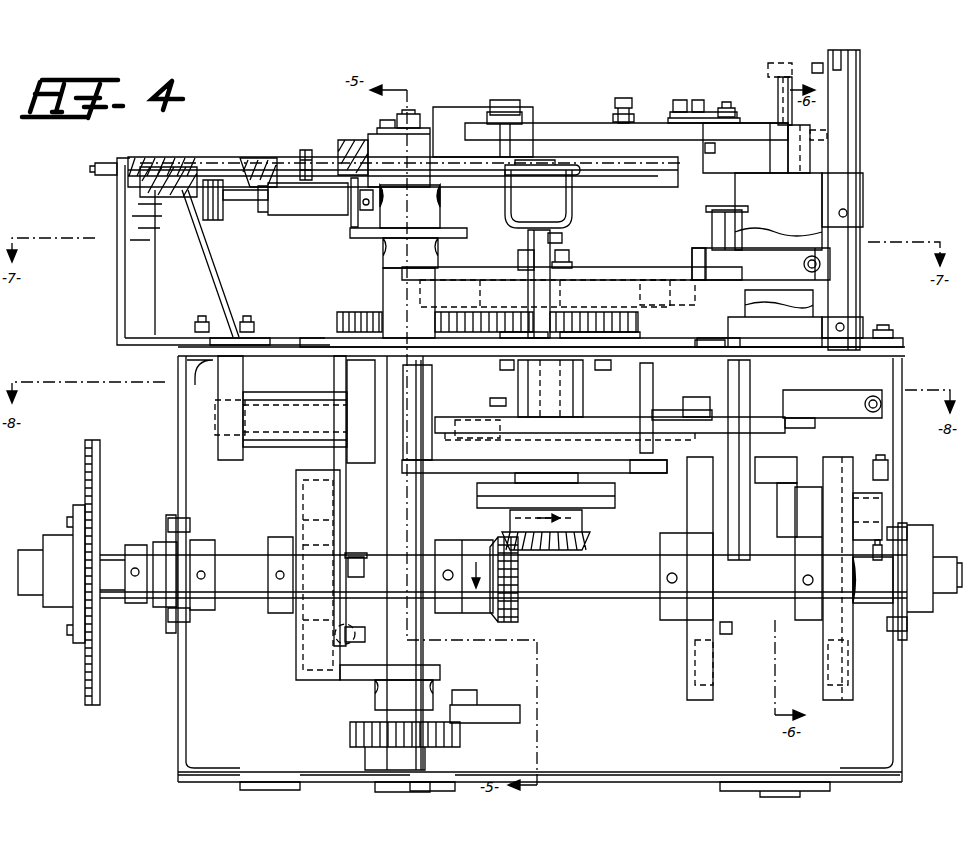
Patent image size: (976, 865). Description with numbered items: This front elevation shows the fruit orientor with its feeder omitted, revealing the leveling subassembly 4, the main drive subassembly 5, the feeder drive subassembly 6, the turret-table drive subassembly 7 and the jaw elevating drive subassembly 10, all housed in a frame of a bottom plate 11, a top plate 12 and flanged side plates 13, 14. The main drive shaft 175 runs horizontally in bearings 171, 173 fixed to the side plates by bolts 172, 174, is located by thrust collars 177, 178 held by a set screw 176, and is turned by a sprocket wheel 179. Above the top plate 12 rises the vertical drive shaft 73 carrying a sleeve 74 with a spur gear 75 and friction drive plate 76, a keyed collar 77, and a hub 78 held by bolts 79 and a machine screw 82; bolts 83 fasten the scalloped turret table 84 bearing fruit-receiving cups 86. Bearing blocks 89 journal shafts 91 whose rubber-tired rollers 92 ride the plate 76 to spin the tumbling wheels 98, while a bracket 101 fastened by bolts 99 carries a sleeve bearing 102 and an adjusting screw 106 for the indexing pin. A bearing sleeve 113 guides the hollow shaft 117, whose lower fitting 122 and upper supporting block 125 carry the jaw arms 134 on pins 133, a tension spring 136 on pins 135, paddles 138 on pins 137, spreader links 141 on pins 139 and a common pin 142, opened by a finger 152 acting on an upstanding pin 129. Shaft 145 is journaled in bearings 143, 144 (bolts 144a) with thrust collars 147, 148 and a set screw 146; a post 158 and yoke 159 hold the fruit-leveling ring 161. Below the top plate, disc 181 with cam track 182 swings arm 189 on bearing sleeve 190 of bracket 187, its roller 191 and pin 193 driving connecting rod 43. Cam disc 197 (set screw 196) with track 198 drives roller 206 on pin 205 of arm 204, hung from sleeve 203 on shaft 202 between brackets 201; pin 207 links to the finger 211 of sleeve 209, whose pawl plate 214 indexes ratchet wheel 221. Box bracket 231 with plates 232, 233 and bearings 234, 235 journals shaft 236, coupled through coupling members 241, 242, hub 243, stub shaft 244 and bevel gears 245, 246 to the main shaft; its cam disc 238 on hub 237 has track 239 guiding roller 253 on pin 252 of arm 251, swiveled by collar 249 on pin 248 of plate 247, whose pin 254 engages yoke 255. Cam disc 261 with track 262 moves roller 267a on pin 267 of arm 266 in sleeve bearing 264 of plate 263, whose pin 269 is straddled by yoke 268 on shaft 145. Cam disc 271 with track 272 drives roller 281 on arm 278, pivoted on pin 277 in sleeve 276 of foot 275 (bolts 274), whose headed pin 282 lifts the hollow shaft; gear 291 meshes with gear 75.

The leveling subassembly 4 is at (592, 216).
The main drive subassembly 5 is at (50, 500).
The feeder drive subassembly 6 is at (654, 655).
The turret-table drive subassembly 7 is at (273, 680).
The jaw elevating drive subassembly 10 is at (810, 628).
The bottom plate 11 is at (646, 770).
The top plate 12 is at (282, 349).
The side plate 13 is at (178, 686).
The side plate 14 is at (902, 696).
The connecting rod 43 is at (750, 444).
The drive shaft 73 is at (394, 518).
The sleeve 74 is at (370, 289).
The spur gear 75 is at (338, 318).
The circular friction drive plate 76 is at (466, 238).
The collar 77 is at (438, 212).
The hub 78 is at (352, 142).
The bolts 79 is at (378, 122).
The machine screw 82 is at (416, 112).
The bolts 83 is at (308, 156).
The turret table 84 is at (282, 165).
The fruit-receiving cup 86 is at (222, 160).
The bearing blocks 89 is at (319, 207).
The shaft 91 is at (242, 202).
The rubber-tired roller 92 is at (348, 224).
The fruit-tumbling wheel 98 is at (212, 220).
The bolts 99 is at (199, 324).
The bracket 101 is at (184, 269).
The sleeve bearing 102 is at (162, 204).
The adjusting screw 106 is at (100, 178).
The bearing sleeve 113 is at (744, 308).
The hollow shaft 117 is at (798, 249).
The fitting 122 is at (784, 536).
The supporting block 125 is at (742, 160).
The upstanding pin 129 is at (772, 102).
The pins 133 is at (796, 124).
The jaw arms 134 is at (556, 132).
The pins 135 is at (618, 100).
The tension spring 136 is at (612, 116).
The pins 137 is at (511, 98).
The fruit-grasping paddles 138 is at (462, 115).
The pins 139 is at (724, 102).
The spreader link 141 is at (670, 118).
The common pin 142 is at (680, 100).
The depending bearing 143 is at (864, 194).
The bearing 144 is at (904, 338).
The bolts 144a is at (892, 333).
The shaft 145 is at (860, 138).
The set screw 146 is at (844, 324).
The thrust collar 147 is at (864, 322).
The thrust collar 148 is at (860, 212).
The finger 152 is at (768, 70).
The post 158 is at (526, 242).
The yoke 159 is at (573, 204).
The fruit-leveling ring 161 is at (528, 177).
The bearing 171 is at (160, 604).
The bolts 172 is at (190, 614).
The bearing 173 is at (924, 600).
The bolts 174 is at (907, 536).
The main drive shaft 175 is at (600, 595).
The set screw 176 is at (134, 578).
The thrust collar 177 is at (138, 540).
The thrust collar 178 is at (210, 540).
The sprocket wheel 179 is at (84, 676).
The disc 181 is at (690, 696).
The cam track 182 is at (710, 660).
The depending bracket 187 is at (718, 340).
The arm 189 is at (704, 472).
The bearing sleeve 190 is at (708, 415).
The cam track follower roller 191 is at (698, 526).
The pin 193 is at (732, 612).
The set screw 196 is at (278, 590).
The cam track disc 197 is at (296, 639).
The cam track 198 is at (298, 490).
The brackets 201 is at (242, 381).
The shaft 202 is at (213, 414).
The sleeve 203 is at (286, 448).
The arm 204 is at (345, 490).
The pin 205 is at (360, 577).
The cam follower roller 206 is at (314, 586).
The pin 207 is at (375, 632).
The sleeve 209 is at (376, 696).
The finger 211 is at (440, 672).
The pawl supporting plate 214 is at (516, 706).
The ratchet wheel 221 is at (348, 737).
The box-shaped bracket 231 is at (472, 472).
The top plate 232 is at (440, 372).
The bottom plate 233 is at (638, 468).
The bearing 234 is at (572, 479).
The bearing 235 is at (600, 372).
The shaft 236 is at (555, 246).
The hub 237 is at (516, 260).
The cam track disc 238 is at (662, 294).
The cam track 239 is at (642, 320).
The coupling member 241 is at (614, 504).
The coupling member 242 is at (470, 510).
The hub 243 is at (578, 516).
The stub shaft 244 is at (506, 522).
The beveled gear 245 is at (586, 535).
The beveled gear 246 is at (510, 612).
The plate 247 is at (336, 340).
The upstanding pin 248 is at (388, 259).
The collar 249 is at (424, 306).
The arm 251 is at (643, 274).
The pin 252 is at (576, 262).
The cam follower roller 253 is at (571, 302).
The upstanding pin 254 is at (712, 222).
The yoke 255 is at (797, 273).
The cam track disc 261 is at (648, 462).
The cam track 262 is at (616, 436).
The plate 263 is at (504, 370).
The sleeve bearing 264 is at (582, 406).
The cam follower arm 266 is at (660, 412).
The pin 267 is at (494, 406).
The cam follower roller 267a is at (482, 438).
The yoke 268 is at (816, 414).
The upstanding pin 269 is at (797, 430).
The cam track disc 271 is at (840, 692).
The cam track 272 is at (828, 668).
The bolts 274 is at (876, 558).
The foot 275 is at (894, 484).
The bearing sleeve 276 is at (862, 468).
The pin 277 is at (893, 502).
The cam track follower arm 278 is at (800, 530).
The cam follower roller 281 is at (838, 578).
The headed pin 282 is at (766, 490).
The gear 291 is at (642, 336).